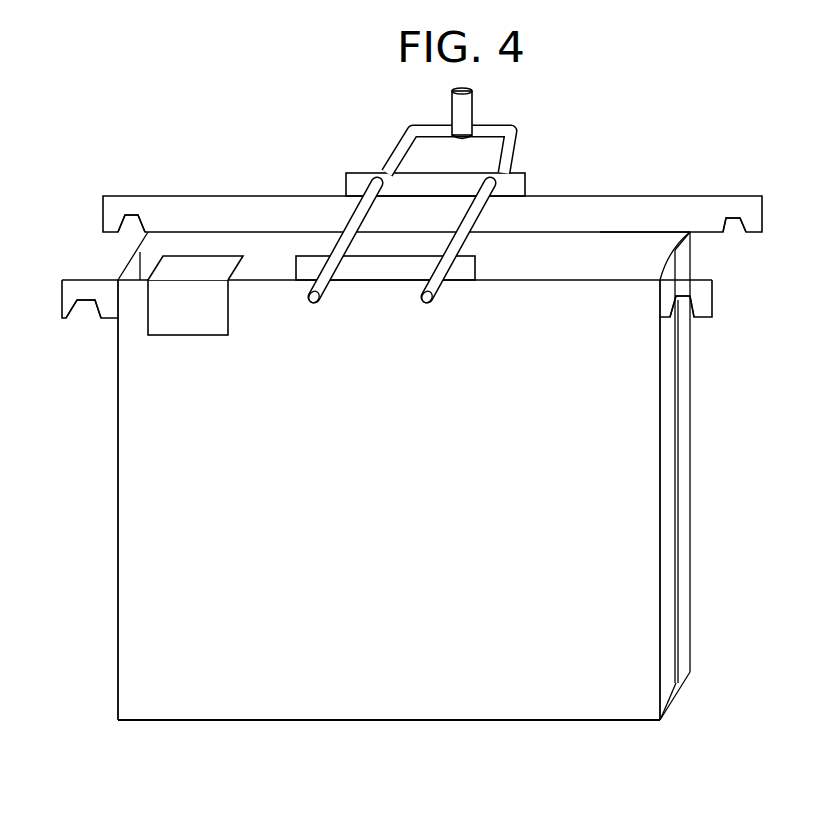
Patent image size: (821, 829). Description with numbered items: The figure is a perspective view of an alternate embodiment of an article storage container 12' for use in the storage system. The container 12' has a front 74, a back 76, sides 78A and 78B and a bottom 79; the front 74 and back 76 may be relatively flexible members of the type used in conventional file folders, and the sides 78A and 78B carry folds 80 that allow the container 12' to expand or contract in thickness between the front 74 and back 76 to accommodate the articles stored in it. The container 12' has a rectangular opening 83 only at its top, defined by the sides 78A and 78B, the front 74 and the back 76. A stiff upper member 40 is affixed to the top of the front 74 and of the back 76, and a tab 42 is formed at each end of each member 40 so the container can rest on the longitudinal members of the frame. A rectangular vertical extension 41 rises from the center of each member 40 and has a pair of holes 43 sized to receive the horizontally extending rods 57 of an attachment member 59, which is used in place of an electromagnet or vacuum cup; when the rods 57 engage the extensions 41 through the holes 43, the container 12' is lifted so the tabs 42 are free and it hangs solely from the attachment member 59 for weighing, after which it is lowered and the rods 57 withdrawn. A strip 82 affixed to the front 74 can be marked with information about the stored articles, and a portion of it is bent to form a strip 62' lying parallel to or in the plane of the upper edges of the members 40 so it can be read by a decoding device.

The article container 12' is at (653, 726).
The stiff upper member 40 is at (266, 206).
The rectangular vertical extension 41 is at (526, 185).
The tab 42 is at (103, 221).
The holes 43 is at (385, 188).
The rods 57 is at (420, 300).
The attachment member 59 is at (473, 110).
The strip 62' is at (217, 259).
The front 74 is at (405, 442).
The back 76 is at (572, 274).
The side 78A is at (118, 435).
The side 78B is at (685, 475).
The bottom 79 is at (302, 722).
The folds 80 is at (677, 427).
The strip 82 is at (230, 310).
The rectangular opening 83 is at (620, 243).